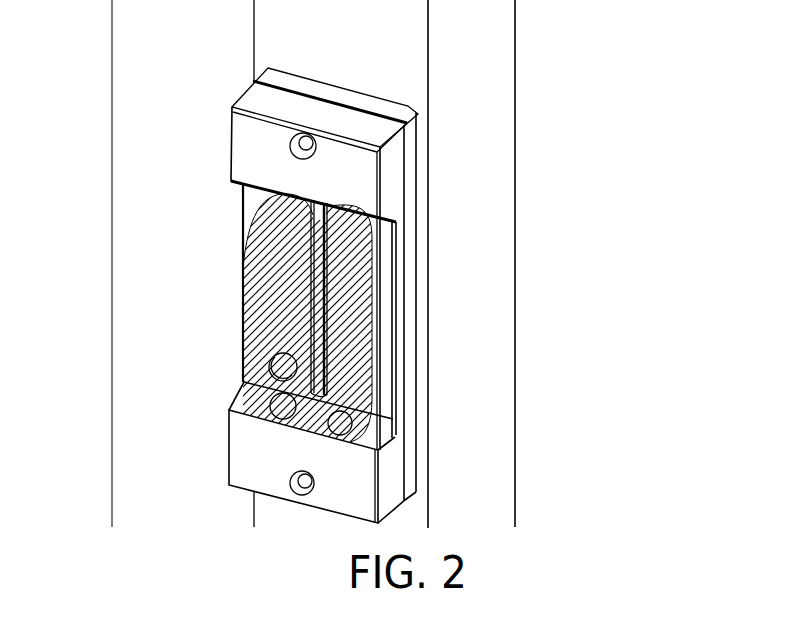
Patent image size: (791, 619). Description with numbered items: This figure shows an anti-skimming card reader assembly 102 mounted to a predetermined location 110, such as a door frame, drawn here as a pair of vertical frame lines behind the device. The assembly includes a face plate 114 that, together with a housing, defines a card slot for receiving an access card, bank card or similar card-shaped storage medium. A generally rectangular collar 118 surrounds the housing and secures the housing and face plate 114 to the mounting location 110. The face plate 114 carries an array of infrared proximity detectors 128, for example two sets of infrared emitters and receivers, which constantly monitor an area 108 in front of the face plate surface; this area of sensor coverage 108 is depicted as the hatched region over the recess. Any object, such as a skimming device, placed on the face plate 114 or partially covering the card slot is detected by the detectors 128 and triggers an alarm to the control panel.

The card reader assembly 102 is at (352, 263).
The area 108 is at (352, 333).
The predetermined location 110 is at (465, 172).
The face plate 114 is at (247, 152).
The collar 118 is at (352, 97).
The array of infrared proximity detectors 128 is at (252, 398).